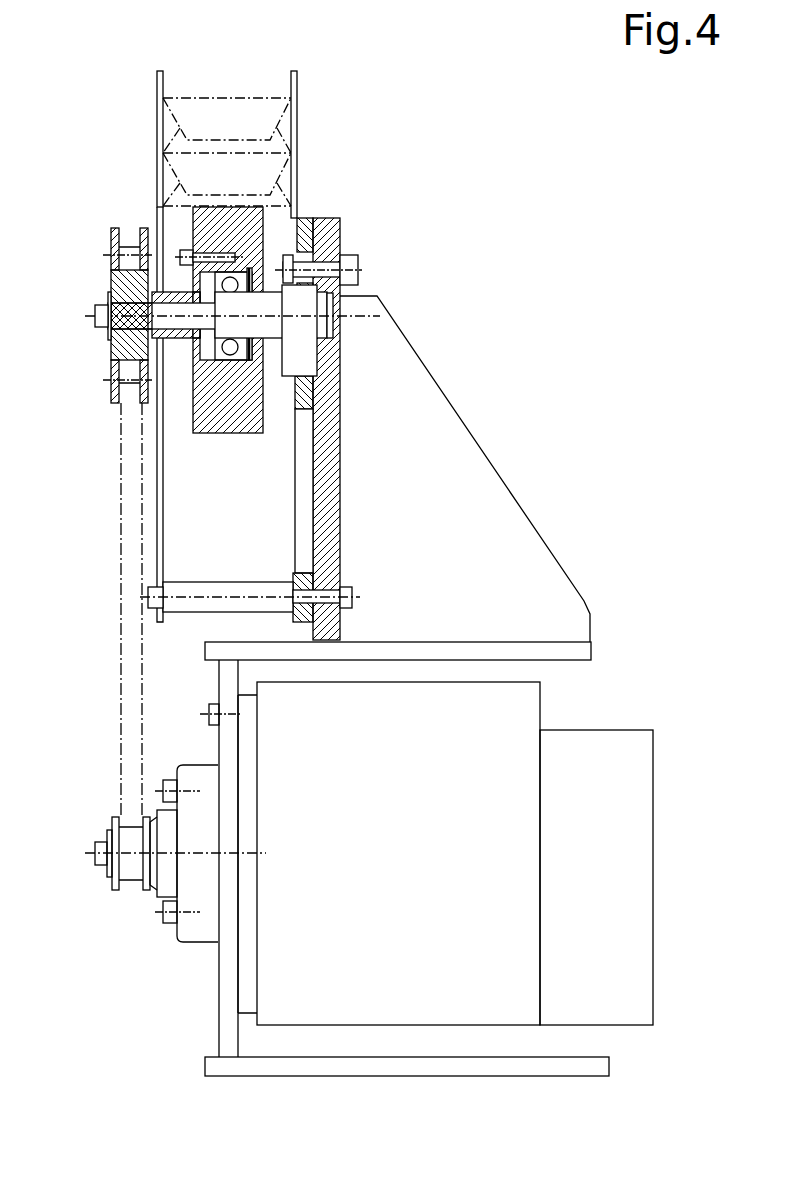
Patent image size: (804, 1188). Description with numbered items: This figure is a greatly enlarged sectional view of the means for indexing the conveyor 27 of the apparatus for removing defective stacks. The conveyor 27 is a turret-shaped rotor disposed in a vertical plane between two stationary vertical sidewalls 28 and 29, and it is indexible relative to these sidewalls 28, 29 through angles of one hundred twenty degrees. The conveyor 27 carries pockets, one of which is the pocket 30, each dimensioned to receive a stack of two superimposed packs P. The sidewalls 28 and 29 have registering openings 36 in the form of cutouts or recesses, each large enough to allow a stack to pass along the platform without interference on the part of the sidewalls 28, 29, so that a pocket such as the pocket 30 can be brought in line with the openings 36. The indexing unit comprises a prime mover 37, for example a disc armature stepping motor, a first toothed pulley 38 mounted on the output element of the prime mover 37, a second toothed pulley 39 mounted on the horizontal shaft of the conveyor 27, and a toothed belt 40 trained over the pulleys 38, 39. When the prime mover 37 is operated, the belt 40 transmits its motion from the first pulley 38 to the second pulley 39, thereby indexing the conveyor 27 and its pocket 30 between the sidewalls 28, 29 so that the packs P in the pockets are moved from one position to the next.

The indexible conveyor 27 is at (236, 408).
The stationary vertical sidewall 28 is at (298, 214).
The stationary vertical sidewall 29 is at (157, 497).
The pocket 30 is at (268, 93).
The openings (cutouts or recesses) 36 is at (291, 80).
The prime mover 37 is at (505, 720).
The first toothed pulley 38 is at (112, 832).
The second toothed pulley 39 is at (111, 282).
The toothed belt 40 is at (120, 595).
The packs P is at (285, 177).